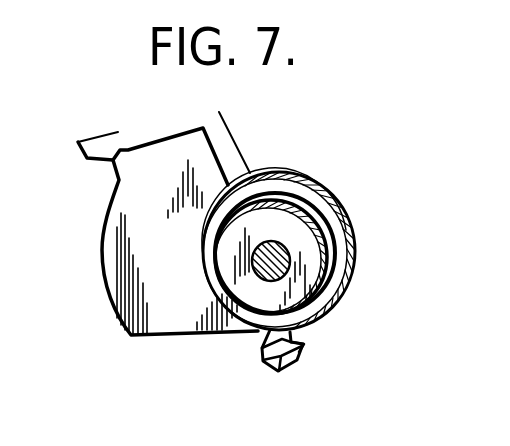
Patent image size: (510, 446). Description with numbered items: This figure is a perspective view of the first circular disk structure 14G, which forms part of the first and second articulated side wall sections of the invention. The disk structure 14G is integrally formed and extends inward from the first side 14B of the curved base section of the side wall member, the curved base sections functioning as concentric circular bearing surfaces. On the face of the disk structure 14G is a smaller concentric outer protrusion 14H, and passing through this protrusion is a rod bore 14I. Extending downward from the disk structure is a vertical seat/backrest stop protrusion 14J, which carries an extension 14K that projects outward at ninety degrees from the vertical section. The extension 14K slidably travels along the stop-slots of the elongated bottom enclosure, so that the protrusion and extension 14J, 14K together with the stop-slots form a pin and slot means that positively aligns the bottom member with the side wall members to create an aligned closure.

The first side 14B is at (117, 195).
The first circular disk structure 14G is at (330, 205).
The smaller concentric outer protrusion 14H is at (310, 268).
The rod bore 14I is at (305, 268).
The vertical seat/backrest stop protrusion 14J is at (303, 355).
The extension 14K is at (262, 354).